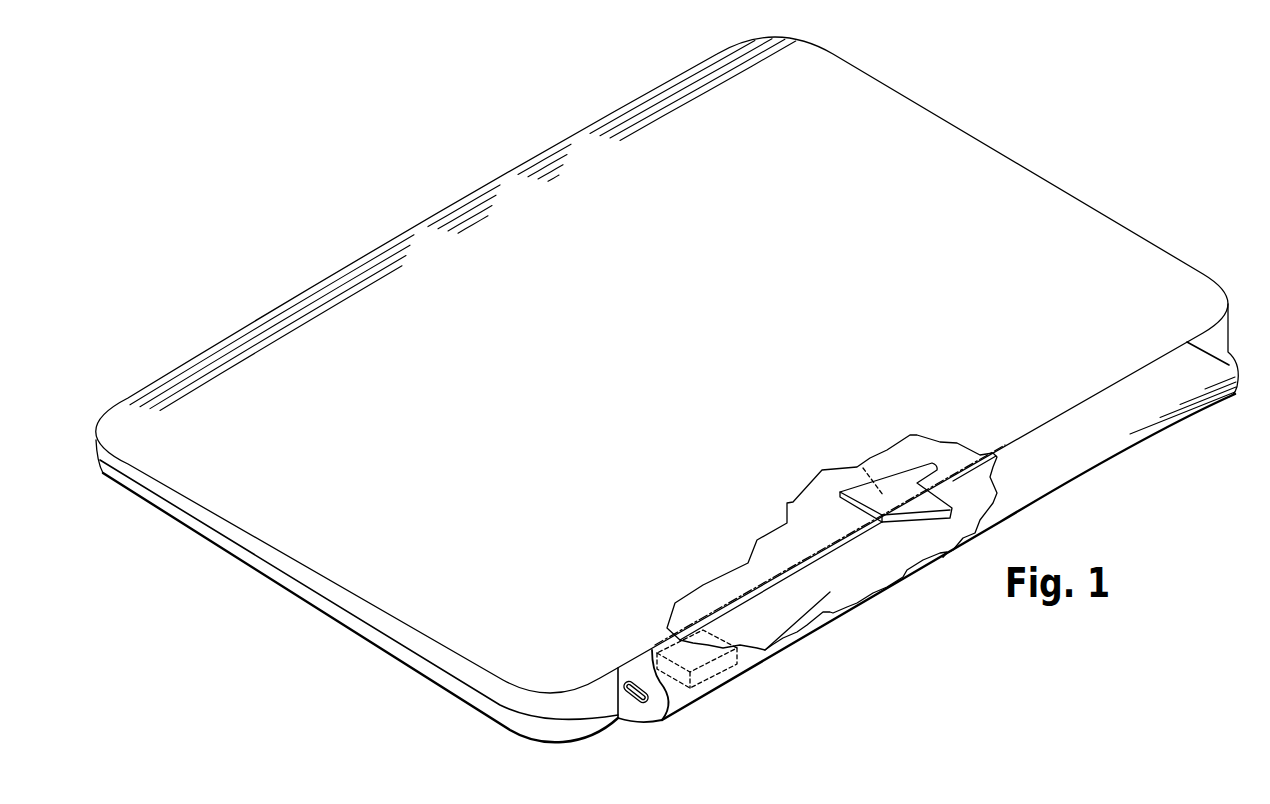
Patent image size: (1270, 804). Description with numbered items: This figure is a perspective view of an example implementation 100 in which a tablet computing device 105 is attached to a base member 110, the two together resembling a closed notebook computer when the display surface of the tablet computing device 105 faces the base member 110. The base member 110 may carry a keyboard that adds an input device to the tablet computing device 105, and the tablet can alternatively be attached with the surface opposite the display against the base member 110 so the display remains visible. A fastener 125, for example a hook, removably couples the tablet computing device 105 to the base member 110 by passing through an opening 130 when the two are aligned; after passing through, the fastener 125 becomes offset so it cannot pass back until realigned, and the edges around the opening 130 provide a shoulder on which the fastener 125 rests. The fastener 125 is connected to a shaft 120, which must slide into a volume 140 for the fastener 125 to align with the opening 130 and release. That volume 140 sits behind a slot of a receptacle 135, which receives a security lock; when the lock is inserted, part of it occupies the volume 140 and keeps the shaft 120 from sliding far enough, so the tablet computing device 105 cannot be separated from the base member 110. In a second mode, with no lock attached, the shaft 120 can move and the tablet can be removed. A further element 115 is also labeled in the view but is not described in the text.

The electronic device 100 is at (421, 183).
The tablet computing device 105 is at (1016, 168).
The base member 110 is at (310, 606).
The spine portion 115 is at (1088, 476).
The shaft 120 is at (863, 578).
The fastener 125 is at (912, 465).
The opening 130 is at (863, 468).
The receptacle 135 is at (641, 705).
The volume 140 is at (646, 671).